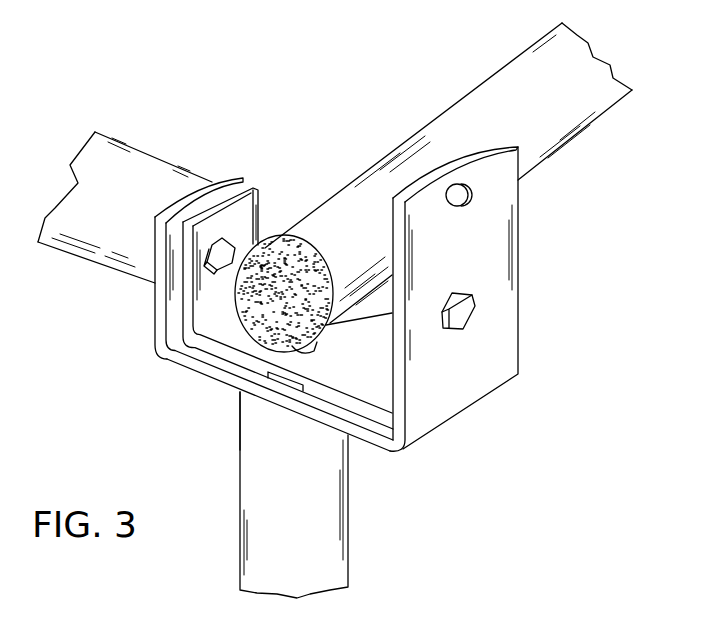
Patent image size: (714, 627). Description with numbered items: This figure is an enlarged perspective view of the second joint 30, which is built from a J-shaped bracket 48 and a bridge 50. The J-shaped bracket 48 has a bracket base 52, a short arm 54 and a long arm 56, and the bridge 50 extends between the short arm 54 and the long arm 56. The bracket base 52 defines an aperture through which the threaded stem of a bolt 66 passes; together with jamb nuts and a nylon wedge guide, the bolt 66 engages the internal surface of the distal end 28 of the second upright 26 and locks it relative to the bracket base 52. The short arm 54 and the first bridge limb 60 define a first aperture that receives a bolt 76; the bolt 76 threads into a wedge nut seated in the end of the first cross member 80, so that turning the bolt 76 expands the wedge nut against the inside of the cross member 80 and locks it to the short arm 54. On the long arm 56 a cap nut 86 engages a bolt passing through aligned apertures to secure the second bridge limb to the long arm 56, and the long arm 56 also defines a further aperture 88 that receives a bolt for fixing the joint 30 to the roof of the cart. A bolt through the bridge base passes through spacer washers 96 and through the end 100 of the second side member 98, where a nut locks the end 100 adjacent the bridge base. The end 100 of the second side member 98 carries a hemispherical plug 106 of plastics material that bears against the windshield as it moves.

The second upright 26 is at (338, 553).
The distal end of the second upright 28 is at (252, 442).
The second joint 30 is at (362, 465).
The J-shaped bracket 48 is at (530, 271).
The bridge 50 is at (266, 194).
The bracket base 52 is at (230, 375).
The short arm 54 is at (154, 308).
The long arm 56 is at (397, 418).
The first bridge limb 60 is at (185, 253).
The bolt 66 is at (292, 391).
The bolt 76 is at (228, 242).
The first cross member 80 is at (146, 161).
The cap nut 86 is at (476, 318).
The further aperture 88 is at (469, 202).
The spacer washers 96 is at (315, 349).
The second side member 98 is at (513, 77).
The end of the second side member 100 is at (305, 231).
The hemispherical plug 106 is at (240, 313).